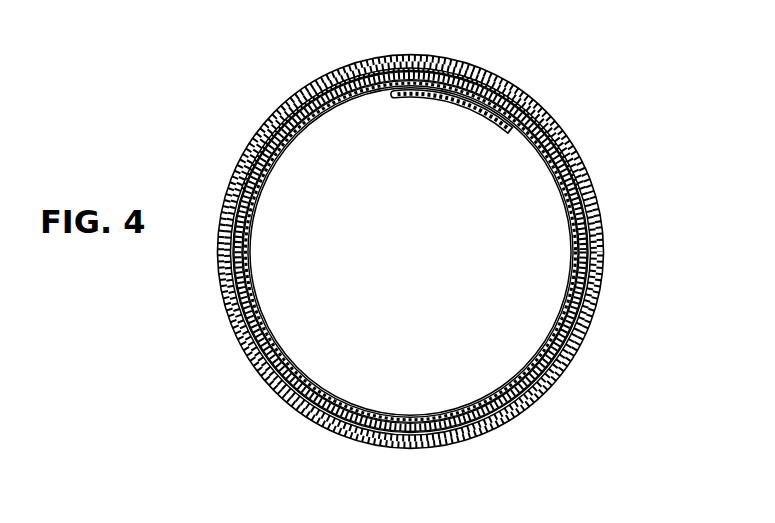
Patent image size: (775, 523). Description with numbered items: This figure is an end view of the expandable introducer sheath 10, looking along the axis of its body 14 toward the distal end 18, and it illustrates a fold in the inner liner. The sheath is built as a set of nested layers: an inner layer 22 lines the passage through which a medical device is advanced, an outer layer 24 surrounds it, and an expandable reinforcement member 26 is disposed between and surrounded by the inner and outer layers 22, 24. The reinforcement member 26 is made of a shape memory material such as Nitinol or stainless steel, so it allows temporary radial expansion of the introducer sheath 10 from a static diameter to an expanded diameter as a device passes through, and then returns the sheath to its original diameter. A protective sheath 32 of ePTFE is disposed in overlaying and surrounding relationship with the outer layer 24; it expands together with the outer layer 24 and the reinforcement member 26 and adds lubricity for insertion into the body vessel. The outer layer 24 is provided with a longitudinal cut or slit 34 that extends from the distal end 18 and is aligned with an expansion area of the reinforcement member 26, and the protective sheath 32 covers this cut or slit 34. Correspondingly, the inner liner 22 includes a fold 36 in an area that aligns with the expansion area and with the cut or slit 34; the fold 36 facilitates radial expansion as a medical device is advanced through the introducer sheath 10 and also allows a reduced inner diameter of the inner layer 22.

The expandable introducer sheath 10 is at (636, 192).
The body 14 is at (298, 409).
The distal end 18 is at (518, 418).
The inner layer 22 is at (250, 279).
The outer layer 24 is at (598, 248).
The expandable reinforcement member 26 is at (378, 85).
The protective sheath 32 is at (540, 100).
The cut or slit 34 is at (546, 121).
The fold 36 is at (444, 100).